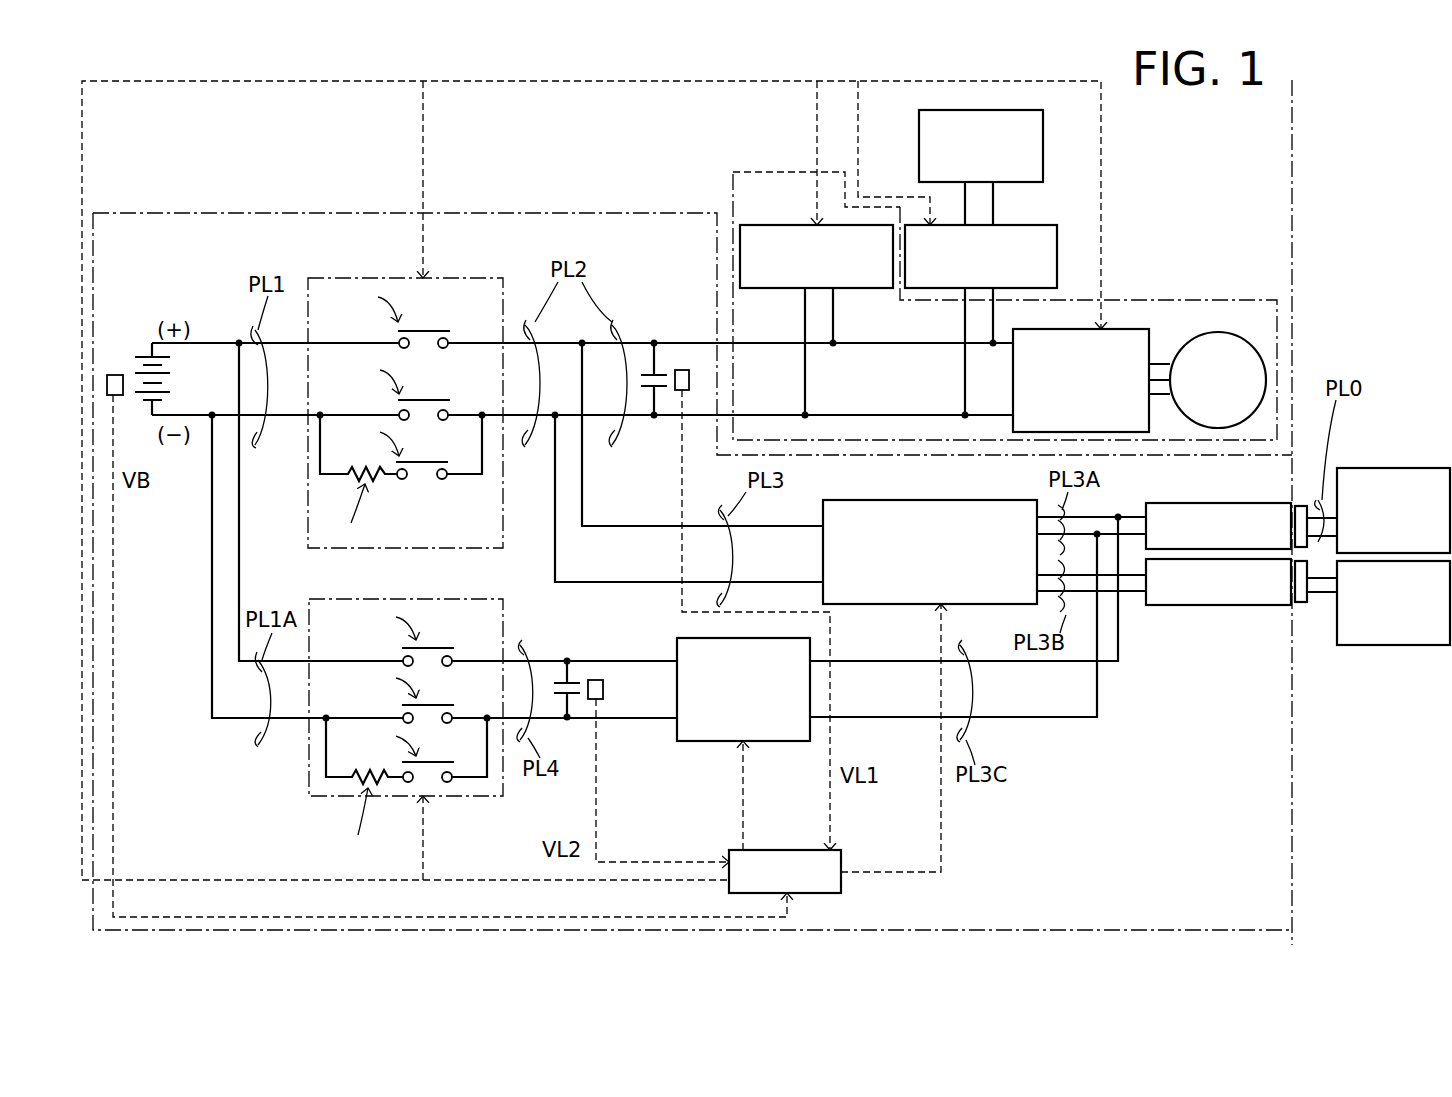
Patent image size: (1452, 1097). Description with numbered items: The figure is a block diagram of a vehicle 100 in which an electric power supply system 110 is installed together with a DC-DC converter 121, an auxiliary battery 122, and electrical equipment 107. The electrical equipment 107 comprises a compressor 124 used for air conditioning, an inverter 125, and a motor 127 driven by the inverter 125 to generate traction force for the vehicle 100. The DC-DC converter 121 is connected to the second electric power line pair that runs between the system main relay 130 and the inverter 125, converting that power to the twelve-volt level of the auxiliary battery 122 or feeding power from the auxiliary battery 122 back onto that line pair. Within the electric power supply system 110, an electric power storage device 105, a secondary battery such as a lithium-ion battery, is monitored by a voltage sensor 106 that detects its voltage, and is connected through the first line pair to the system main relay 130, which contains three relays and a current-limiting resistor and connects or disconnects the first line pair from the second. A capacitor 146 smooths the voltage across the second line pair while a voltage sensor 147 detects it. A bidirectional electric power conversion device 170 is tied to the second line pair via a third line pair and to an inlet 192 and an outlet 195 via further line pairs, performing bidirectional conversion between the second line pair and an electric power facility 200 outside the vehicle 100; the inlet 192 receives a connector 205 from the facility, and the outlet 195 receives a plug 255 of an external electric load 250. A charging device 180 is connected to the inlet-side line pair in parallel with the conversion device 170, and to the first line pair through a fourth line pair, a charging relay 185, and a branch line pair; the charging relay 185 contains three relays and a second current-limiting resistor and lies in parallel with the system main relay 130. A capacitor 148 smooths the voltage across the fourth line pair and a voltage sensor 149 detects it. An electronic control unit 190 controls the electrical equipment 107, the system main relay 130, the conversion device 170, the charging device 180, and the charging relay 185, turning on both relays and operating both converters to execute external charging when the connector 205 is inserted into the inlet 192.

The vehicle 100 is at (1228, 190).
The electric power storage device 105 is at (143, 332).
The voltage sensor 106 is at (115, 372).
The electrical equipment 107 is at (780, 172).
The electric power supply system 110 is at (620, 213).
The DC-DC converter 121 is at (1020, 228).
The auxiliary battery 122 is at (1068, 142).
The compressor 124 is at (780, 225).
The inverter 125 is at (1128, 330).
The motor 127 is at (1192, 334).
The system main relay 130 is at (440, 278).
The capacitor 146 is at (662, 370).
The voltage sensor 147 is at (686, 367).
The capacitor 148 is at (577, 680).
The voltage sensor 149 is at (604, 690).
The bidirectional electric power conversion device 170 is at (943, 500).
The charging device 180 is at (700, 741).
The charging relay 185 is at (444, 600).
The electronic control unit 190 is at (843, 860).
The inlet 192 is at (1180, 504).
The outlet 195 is at (1180, 607).
The electric power facility 200 is at (1384, 470).
The connector 205 is at (1302, 503).
The electric load 250 is at (1386, 647).
The plug 255 is at (1302, 605).